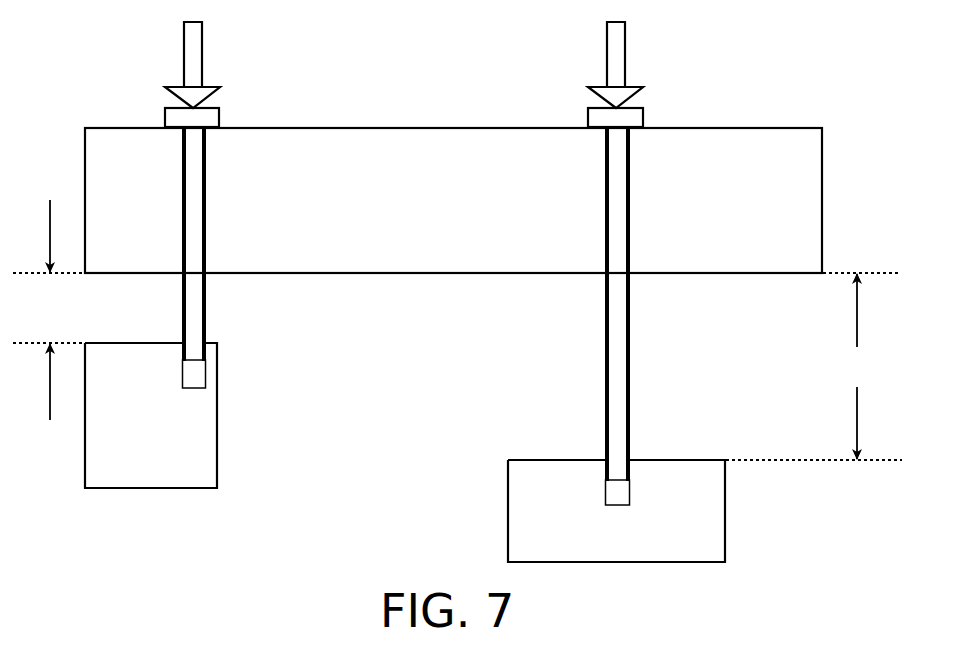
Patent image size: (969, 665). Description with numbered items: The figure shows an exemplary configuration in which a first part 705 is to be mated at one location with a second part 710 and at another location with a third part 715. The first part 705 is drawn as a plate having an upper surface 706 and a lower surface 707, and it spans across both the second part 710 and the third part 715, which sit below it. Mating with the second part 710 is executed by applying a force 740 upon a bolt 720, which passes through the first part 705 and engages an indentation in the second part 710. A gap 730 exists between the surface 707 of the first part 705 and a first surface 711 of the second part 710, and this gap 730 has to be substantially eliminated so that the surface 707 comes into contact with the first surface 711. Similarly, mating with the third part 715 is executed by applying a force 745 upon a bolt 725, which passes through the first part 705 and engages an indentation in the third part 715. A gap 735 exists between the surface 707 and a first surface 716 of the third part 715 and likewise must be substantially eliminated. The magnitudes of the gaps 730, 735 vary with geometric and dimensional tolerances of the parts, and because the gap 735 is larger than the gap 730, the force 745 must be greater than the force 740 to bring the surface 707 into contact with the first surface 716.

The first part 705 is at (424, 210).
The surface 706 is at (328, 123).
The surface 707 is at (328, 279).
The second part 710 is at (136, 430).
The first surface 711 is at (160, 338).
The third part 715 is at (604, 537).
The first surface 716 is at (701, 455).
The bolt 720 is at (220, 118).
The bolt 725 is at (644, 118).
The gap 730 is at (48, 310).
The gap 735 is at (814, 366).
The force 740 is at (204, 50).
The force 745 is at (627, 50).